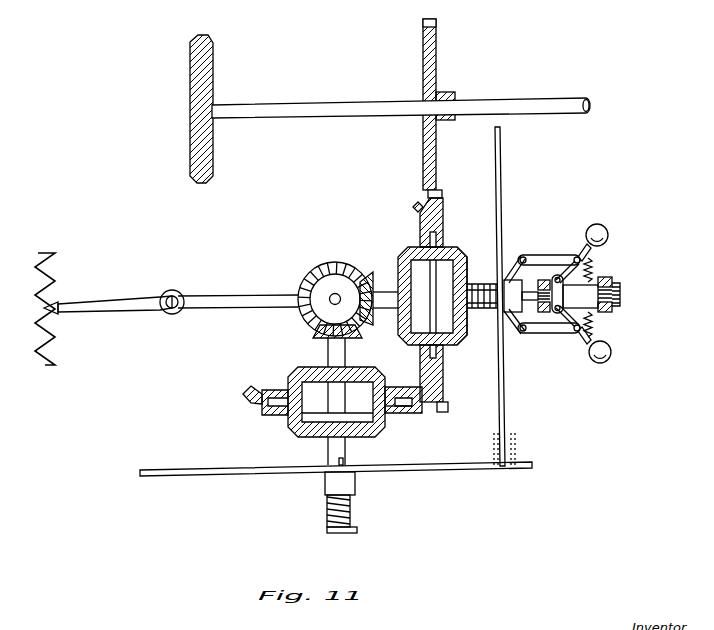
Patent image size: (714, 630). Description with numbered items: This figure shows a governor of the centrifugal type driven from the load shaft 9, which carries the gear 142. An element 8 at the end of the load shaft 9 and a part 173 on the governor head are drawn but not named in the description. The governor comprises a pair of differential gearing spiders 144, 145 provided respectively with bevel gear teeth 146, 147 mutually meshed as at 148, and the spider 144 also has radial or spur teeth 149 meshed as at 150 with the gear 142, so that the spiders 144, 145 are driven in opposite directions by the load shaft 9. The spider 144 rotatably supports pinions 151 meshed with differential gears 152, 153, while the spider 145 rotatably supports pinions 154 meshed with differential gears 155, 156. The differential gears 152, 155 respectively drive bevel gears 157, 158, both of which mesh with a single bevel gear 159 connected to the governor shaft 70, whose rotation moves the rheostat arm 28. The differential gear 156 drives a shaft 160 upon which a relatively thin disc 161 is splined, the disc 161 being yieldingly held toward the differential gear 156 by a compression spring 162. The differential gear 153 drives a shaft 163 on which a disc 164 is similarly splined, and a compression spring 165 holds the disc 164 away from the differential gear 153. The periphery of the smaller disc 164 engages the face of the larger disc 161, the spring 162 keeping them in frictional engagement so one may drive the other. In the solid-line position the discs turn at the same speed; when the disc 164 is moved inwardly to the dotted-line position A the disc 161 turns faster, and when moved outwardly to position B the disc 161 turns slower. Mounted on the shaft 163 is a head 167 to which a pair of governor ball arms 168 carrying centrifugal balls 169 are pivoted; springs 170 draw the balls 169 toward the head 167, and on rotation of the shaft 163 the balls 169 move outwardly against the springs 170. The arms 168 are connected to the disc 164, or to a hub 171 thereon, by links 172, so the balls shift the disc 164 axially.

The bar 8 is at (213, 70).
The load shaft 9 is at (573, 96).
The rheostat arm 28 is at (114, 302).
The governor shaft 70 is at (217, 292).
The gear 142 is at (437, 51).
The differential gearing spider 144 is at (443, 218).
The differential gearing spider 145 is at (403, 414).
The bevel gear teeth 146 is at (413, 207).
The bevel gear teeth 147 is at (246, 390).
The mesh of bevel gear teeth 148 is at (418, 386).
The spur teeth 149 is at (448, 407).
The mesh of spur teeth 150 is at (443, 193).
The pinions 151 is at (434, 262).
The differential gear 152 is at (398, 262).
The differential gear 153 is at (463, 262).
The pinions 154 is at (372, 411).
The differential gear 155 is at (315, 367).
The differential gear 156 is at (306, 436).
The bevel gear 157 is at (383, 271).
The bevel gear 158 is at (350, 336).
The bevel gear 159 is at (300, 282).
The shaft 160 is at (345, 446).
The disc 161 is at (402, 470).
The compression spring 162 is at (352, 510).
The shaft 163 is at (487, 310).
The disc 164 is at (505, 387).
The compression spring 165 is at (478, 290).
The head 167 is at (560, 294).
The governor ball arms 168 is at (586, 338).
The governor centrifugal balls 169 is at (611, 352).
The springs 170 is at (594, 322).
The hub 171 is at (506, 315).
The links 172 is at (547, 333).
The nut 173 is at (542, 308).
The dotted line position A is at (493, 447).
The dotted line position B is at (516, 447).